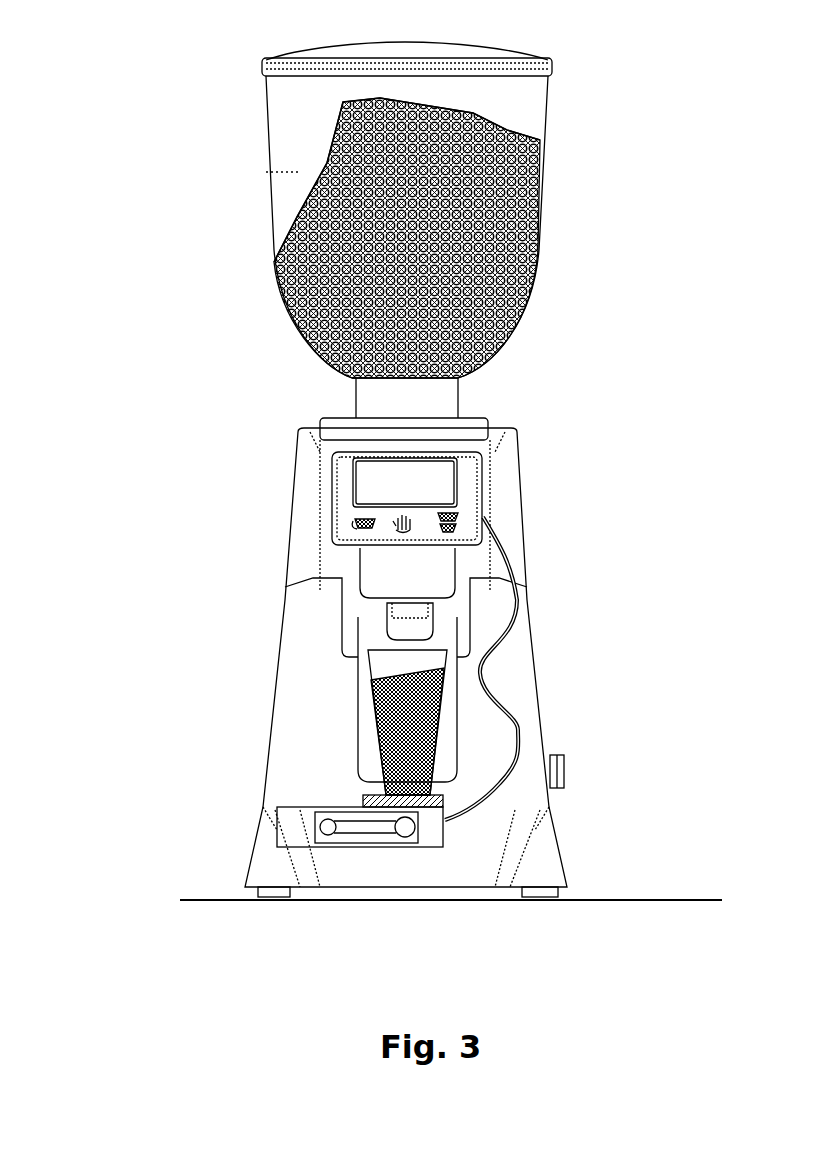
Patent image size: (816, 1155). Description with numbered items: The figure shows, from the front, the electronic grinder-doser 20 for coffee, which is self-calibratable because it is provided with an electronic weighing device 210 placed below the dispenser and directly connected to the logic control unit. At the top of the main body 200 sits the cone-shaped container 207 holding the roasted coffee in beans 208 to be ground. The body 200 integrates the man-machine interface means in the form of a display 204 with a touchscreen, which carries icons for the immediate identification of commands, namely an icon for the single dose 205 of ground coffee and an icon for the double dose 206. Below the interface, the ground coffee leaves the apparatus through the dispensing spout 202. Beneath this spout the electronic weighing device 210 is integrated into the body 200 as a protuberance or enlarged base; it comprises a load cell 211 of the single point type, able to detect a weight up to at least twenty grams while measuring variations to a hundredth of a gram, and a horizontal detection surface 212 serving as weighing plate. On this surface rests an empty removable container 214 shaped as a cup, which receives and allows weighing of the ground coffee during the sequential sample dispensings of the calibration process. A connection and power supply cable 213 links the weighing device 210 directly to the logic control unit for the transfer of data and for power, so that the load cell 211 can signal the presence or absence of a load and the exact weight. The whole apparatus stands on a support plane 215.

The electronic grinder-doser 20 is at (140, 95).
The cone-shaped container for beans of roasted coffee 207 is at (548, 89).
The roasted coffee in beans 208 is at (537, 237).
The main body of the grinder-doser 200 is at (312, 708).
The display with touchscreen 204 is at (473, 498).
The icon for single dose of ground coffee 205 is at (365, 523).
The icon for double dose of ground coffee 206 is at (448, 523).
The dispensing spout 202 is at (428, 625).
The removable container for sampling by multiple detections 214 is at (440, 705).
The connection and power supply cable 213 is at (513, 725).
The electronic weighing device 210 is at (330, 792).
The horizontal detection surface 212 is at (442, 797).
The load cell 211 is at (433, 820).
The support plane 215 is at (222, 898).